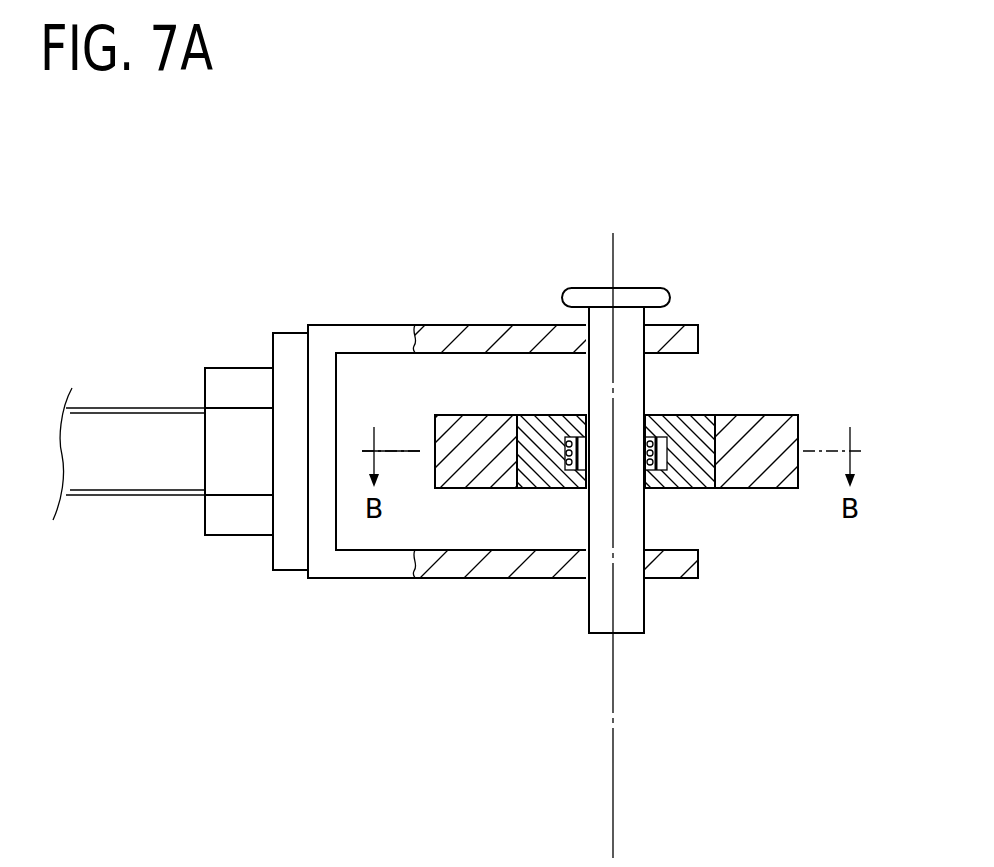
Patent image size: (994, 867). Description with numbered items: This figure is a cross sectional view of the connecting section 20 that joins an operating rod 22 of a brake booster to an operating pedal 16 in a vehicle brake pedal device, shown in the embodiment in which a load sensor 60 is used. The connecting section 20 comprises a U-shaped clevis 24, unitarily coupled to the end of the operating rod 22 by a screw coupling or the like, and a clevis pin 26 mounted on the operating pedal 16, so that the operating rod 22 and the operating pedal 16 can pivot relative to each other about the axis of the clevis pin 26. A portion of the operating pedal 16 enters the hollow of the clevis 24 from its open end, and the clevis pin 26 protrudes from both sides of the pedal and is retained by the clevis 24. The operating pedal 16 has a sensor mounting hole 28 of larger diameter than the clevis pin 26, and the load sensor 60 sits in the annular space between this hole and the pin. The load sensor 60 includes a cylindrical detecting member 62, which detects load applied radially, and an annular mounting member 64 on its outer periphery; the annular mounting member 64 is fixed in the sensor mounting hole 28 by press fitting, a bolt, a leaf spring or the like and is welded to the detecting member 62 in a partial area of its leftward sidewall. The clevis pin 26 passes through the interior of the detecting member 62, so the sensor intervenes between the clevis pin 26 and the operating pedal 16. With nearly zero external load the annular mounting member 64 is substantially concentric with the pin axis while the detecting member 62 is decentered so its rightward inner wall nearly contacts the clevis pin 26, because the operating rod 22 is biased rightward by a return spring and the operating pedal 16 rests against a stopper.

The operating pedal 16 is at (763, 477).
The connecting section 20 is at (303, 612).
The operating rod 22 is at (127, 427).
The U-shaped clevis 24 is at (367, 335).
The clevis pin 26 is at (628, 322).
The sensor mounting hole 28 is at (541, 490).
The load sensor 60 is at (715, 376).
The detecting member 62 is at (652, 462).
The annular mounting member 64 is at (533, 417).